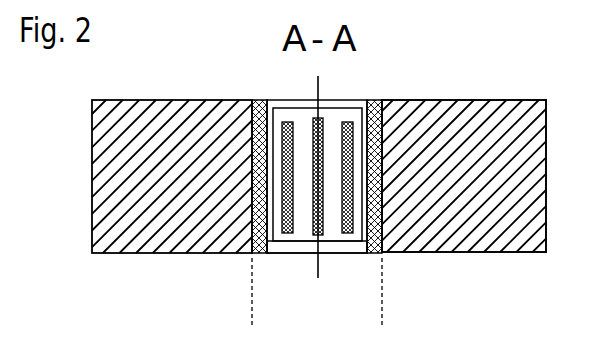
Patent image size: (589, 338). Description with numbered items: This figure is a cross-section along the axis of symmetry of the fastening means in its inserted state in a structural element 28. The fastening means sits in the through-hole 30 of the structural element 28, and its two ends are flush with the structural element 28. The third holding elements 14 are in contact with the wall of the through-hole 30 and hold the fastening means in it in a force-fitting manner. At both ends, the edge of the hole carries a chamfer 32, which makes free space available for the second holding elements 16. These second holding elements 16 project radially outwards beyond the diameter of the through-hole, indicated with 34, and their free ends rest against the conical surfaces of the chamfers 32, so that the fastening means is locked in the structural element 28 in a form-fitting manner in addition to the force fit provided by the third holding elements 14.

The third holding elements 14 is at (418, 97).
The second holding elements 16 is at (255, 102).
The structural element 28 is at (468, 120).
The through-hole 30 is at (284, 241).
The chamfer 32 is at (251, 100).
The diameter of the through-hole 34 is at (252, 295).